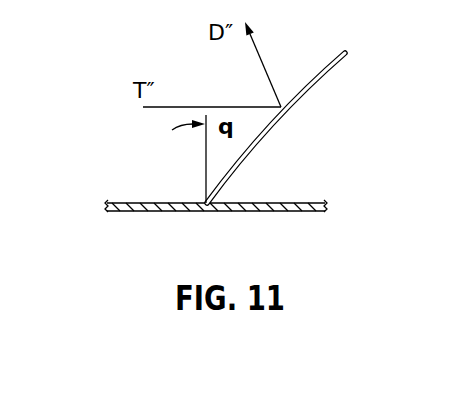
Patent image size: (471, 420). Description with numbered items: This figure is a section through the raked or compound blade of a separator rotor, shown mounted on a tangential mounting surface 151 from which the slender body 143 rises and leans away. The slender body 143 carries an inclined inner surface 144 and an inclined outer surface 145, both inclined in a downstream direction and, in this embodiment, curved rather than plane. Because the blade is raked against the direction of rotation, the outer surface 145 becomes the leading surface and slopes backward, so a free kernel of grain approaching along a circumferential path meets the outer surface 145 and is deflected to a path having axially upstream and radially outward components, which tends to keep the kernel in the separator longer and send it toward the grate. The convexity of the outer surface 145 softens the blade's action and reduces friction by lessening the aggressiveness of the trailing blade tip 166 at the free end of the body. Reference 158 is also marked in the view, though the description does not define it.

The slender body 143 is at (289, 62).
The inner surface 144 is at (313, 87).
The outer surface 145 is at (300, 89).
The tangential mounting surface 151 is at (198, 211).
The blade 158 is at (262, 145).
The trailing blade tip 166 is at (348, 52).